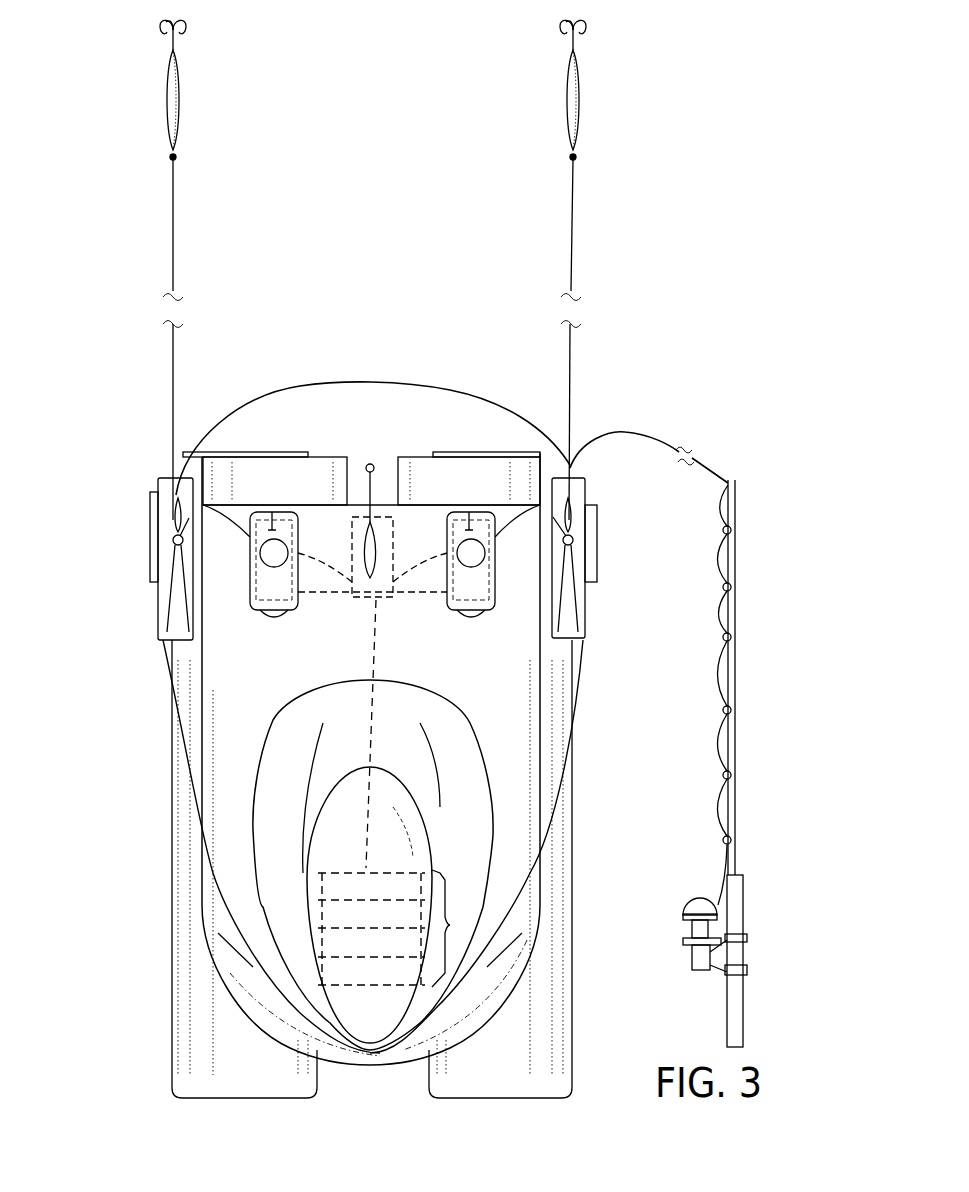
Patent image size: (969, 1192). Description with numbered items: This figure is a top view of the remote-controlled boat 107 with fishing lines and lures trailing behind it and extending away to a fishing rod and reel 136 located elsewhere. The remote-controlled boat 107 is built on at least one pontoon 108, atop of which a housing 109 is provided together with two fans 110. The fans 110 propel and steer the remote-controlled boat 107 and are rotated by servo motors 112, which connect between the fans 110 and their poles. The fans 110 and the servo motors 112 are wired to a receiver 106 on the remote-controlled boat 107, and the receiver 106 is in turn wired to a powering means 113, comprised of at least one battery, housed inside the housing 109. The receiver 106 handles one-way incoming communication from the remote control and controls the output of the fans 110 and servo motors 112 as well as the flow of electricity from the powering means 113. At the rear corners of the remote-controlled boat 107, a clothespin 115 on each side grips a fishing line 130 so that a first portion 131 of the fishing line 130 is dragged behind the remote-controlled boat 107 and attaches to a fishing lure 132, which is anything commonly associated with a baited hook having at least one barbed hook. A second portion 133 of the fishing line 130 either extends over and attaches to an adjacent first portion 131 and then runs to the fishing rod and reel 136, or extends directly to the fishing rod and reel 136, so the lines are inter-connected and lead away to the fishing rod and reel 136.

The remote-controlled boat 107 is at (84, 247).
The fishing lure 132 is at (580, 93).
The first portion 131 is at (569, 225).
The second portion 133 is at (455, 390).
The fishing line 130 is at (633, 433).
The clothespin 115 is at (163, 493).
The fans 110 is at (287, 472).
The housing 109 is at (243, 740).
The servo motors 112 is at (483, 558).
The receiver 106 is at (400, 550).
The powering means 113 is at (450, 925).
The pontoon 108 is at (225, 1070).
The fishing rod and reel 136 is at (726, 855).